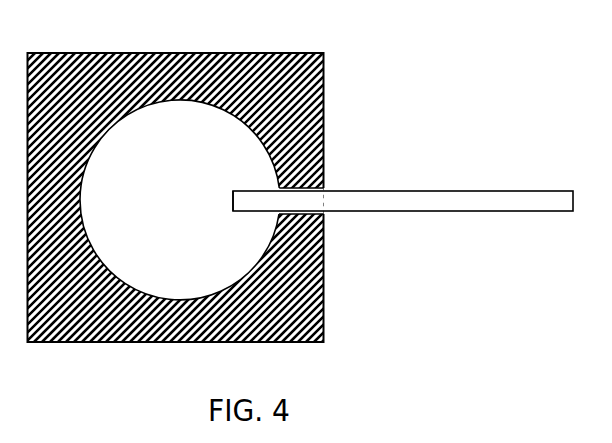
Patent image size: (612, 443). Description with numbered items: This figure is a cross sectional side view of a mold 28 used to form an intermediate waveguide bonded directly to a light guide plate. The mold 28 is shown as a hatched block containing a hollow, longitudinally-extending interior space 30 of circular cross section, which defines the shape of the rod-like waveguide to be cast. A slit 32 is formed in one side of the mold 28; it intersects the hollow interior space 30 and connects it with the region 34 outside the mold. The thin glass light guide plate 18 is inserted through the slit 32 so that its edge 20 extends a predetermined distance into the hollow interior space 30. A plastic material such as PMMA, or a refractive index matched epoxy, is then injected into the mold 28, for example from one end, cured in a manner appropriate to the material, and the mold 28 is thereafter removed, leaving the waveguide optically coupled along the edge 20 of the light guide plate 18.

The light guide plate 18 is at (374, 187).
The edge 20 is at (232, 202).
The mold 28 is at (250, 53).
The hollow interior space 30 is at (178, 181).
The slit 32 is at (320, 237).
The region outside the mold 34 is at (393, 103).